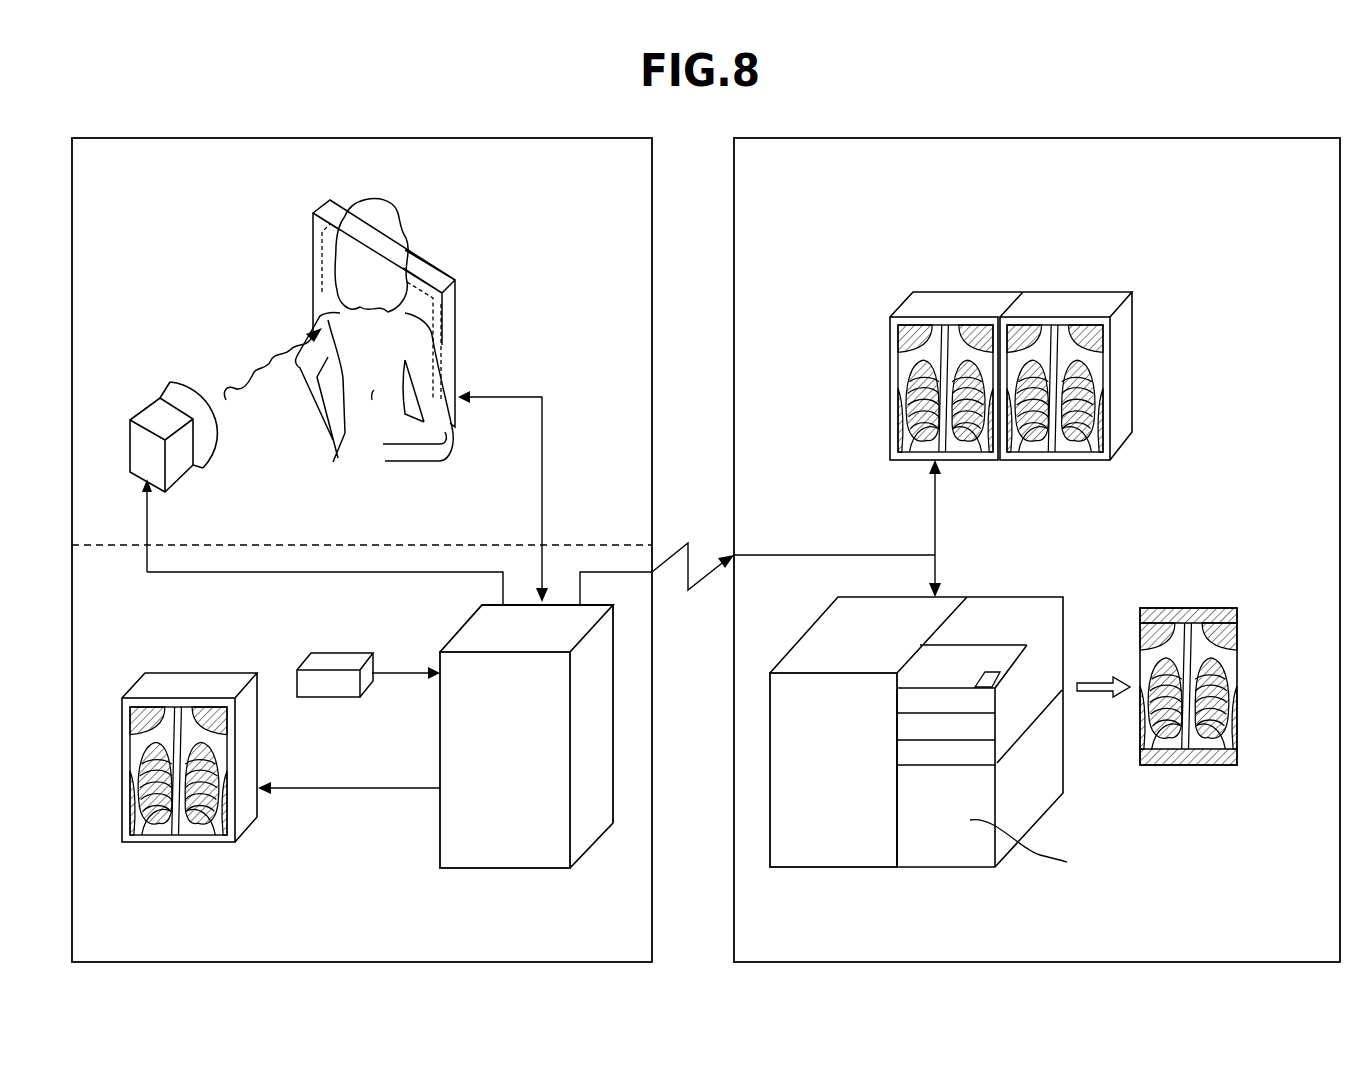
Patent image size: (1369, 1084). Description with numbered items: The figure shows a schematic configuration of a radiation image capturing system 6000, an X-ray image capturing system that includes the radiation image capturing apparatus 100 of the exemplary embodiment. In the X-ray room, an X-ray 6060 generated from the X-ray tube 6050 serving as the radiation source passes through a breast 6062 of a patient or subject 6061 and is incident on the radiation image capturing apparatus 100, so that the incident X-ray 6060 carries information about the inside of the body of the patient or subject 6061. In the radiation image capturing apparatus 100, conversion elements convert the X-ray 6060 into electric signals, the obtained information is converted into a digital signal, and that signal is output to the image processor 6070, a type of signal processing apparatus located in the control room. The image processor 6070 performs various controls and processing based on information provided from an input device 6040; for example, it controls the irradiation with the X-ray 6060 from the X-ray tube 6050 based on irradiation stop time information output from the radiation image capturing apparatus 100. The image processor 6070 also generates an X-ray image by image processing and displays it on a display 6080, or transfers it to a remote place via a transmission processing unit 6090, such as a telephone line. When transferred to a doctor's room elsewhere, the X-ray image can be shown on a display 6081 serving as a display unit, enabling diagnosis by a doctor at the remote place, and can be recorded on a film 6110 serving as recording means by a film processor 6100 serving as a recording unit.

The radiation image capturing system 6000 is at (720, 129).
The radiation image capturing apparatus 100 is at (420, 288).
The patient or subject 6061 is at (388, 207).
The breast 6062 is at (372, 405).
The X-ray tube 6050 is at (151, 412).
The X-ray 6060 is at (253, 393).
The display 6080 is at (173, 688).
The input device 6040 is at (323, 688).
The image processor 6070 is at (457, 835).
The transmission processing unit 6090 is at (675, 548).
The display 6081 is at (958, 302).
The film processor 6100 is at (828, 847).
The film 6110 is at (1168, 607).